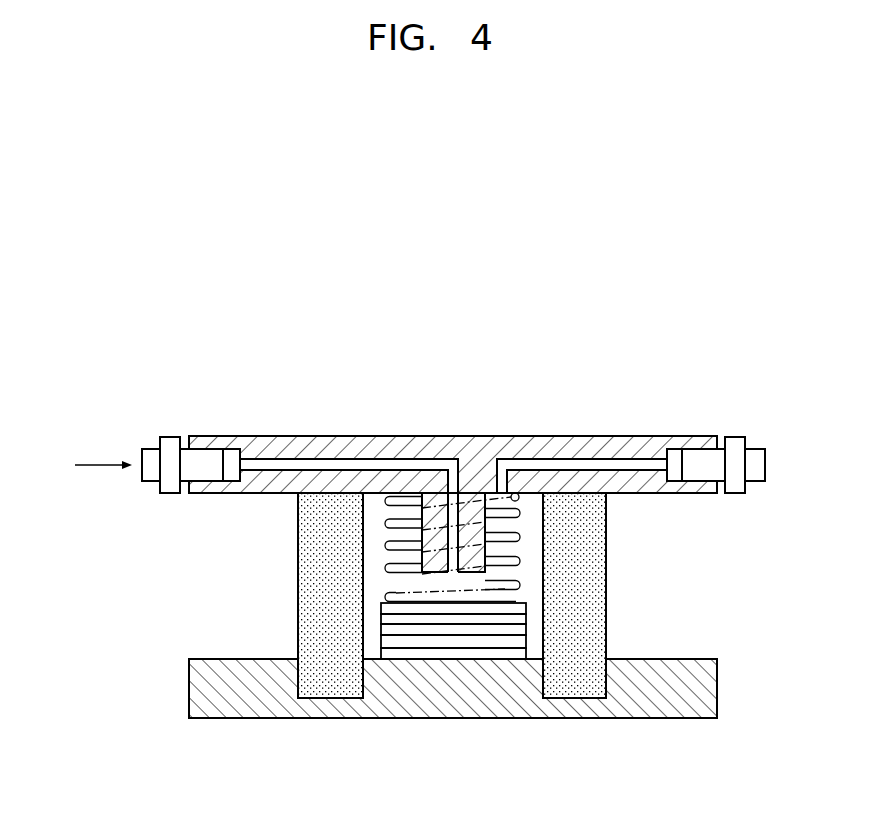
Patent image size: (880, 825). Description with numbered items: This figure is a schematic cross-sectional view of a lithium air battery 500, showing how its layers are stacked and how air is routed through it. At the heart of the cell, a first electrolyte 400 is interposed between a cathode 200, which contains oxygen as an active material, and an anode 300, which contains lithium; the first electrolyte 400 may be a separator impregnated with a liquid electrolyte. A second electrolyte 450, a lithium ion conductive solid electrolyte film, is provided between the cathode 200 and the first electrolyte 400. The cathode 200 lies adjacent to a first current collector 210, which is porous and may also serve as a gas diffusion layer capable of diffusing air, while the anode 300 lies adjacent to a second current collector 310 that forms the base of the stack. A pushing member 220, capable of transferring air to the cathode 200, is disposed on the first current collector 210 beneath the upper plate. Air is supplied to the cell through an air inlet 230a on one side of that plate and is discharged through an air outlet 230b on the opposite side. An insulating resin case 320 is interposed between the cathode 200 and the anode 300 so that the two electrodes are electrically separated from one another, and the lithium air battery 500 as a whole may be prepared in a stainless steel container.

The lithium air battery 500 is at (172, 388).
The air inlet 230a is at (152, 473).
The air outlet 230b is at (755, 475).
The pushing member 220 is at (520, 540).
The insulating resin case 320 is at (305, 580).
The second current collector 310 is at (198, 690).
The first current collector 210 is at (530, 605).
The cathode 200 is at (530, 615).
The second electrolyte 450 is at (530, 627).
The first electrolyte 400 is at (530, 640).
The anode 300 is at (530, 652).